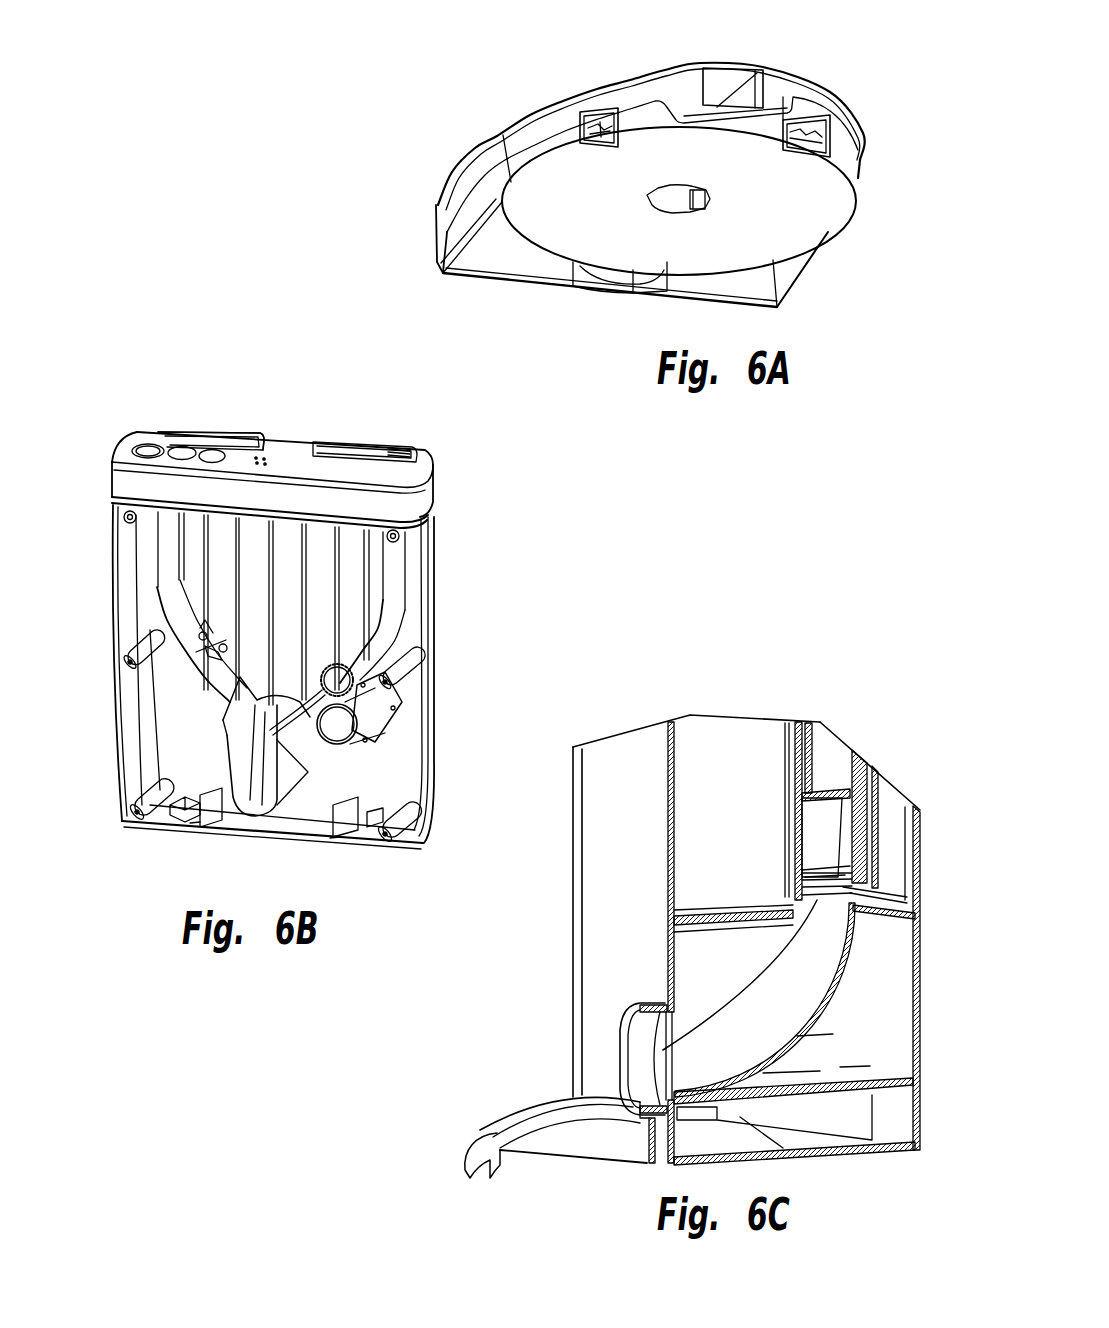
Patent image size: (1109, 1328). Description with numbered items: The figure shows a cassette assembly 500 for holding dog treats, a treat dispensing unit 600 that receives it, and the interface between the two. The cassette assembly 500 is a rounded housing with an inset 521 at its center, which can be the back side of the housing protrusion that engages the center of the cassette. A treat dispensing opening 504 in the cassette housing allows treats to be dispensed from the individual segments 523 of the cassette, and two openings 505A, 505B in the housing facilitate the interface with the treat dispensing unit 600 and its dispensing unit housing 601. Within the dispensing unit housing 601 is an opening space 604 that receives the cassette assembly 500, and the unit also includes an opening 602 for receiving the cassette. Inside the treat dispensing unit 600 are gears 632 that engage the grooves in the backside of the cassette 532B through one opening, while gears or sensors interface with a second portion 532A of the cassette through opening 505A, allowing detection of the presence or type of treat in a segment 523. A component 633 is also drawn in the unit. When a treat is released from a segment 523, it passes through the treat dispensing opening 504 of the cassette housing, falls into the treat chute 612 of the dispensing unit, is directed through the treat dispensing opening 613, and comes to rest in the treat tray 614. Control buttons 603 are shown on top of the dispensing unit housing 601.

In FIG. 6A, the cassette assembly 500 is at (408, 130).
In FIG. 6C, the cassette assembly 500 is at (816, 724).
In FIG. 6A, the treat dispensing opening 504 is at (728, 80).
In FIG. 6C, the treat dispensing opening 504 is at (820, 900).
In FIG. 6A, the opening in cassette housing 505A is at (577, 132).
In FIG. 6A, the opening in cassette housing 505B is at (813, 133).
In FIG. 6A, the inset 521 is at (670, 200).
In FIG. 6C, the segment of the cassette 523 is at (812, 818).
In FIG. 6A, the second portion of the cassette 532A is at (590, 128).
In FIG. 6A, the grooves in the backside of the cassette 532B is at (830, 152).
In FIG. 6B, the treat dispensing unit 600 is at (392, 420).
In FIG. 6C, the treat dispensing unit 600 is at (927, 714).
In FIG. 6B, the dispensing unit housing 601 is at (430, 482).
In FIG. 6B, the opening 602 is at (286, 447).
In FIG. 6B, the control buttons 603 is at (132, 440).
In FIG. 6B, the opening space 604 is at (396, 574).
In FIG. 6B, the treat chute 612 is at (250, 793).
In FIG. 6C, the treat chute 612 is at (802, 1000).
In FIG. 6C, the treat dispensing opening 613 is at (630, 1043).
In FIG. 6C, the treat tray 614 is at (510, 1122).
In FIG. 6B, the gears 632 is at (338, 672).
In FIG. 6B, the sensor bracket 633 is at (200, 642).